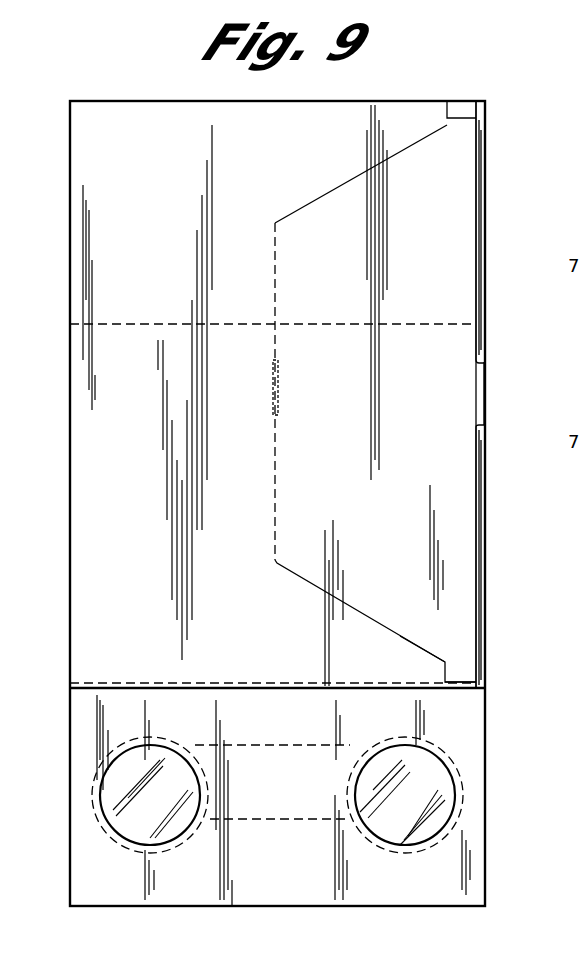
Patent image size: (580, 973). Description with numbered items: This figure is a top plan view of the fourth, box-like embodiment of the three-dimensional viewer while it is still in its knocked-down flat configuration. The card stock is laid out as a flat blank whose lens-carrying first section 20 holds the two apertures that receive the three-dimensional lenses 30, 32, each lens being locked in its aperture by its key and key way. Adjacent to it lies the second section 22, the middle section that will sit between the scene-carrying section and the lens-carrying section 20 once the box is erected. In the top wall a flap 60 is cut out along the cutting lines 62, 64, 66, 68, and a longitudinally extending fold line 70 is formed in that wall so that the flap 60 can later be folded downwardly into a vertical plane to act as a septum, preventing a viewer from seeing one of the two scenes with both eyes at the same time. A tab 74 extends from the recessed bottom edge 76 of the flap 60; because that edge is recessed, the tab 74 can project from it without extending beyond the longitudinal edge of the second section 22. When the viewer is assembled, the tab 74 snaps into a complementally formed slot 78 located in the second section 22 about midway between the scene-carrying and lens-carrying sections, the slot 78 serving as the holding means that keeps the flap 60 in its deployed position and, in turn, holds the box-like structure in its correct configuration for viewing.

The first section 20 is at (262, 890).
The second section 22 is at (480, 162).
The 3-D lens 30 is at (122, 818).
The 3-D lens 32 is at (440, 786).
The flap 60 is at (312, 540).
The cutting line 62 is at (447, 677).
The cutting line 64 is at (418, 645).
The cutting line 66 is at (398, 158).
The cutting line 68 is at (450, 118).
The fold line 70 is at (272, 250).
The tab 74 is at (478, 395).
The recessed bottom edge 76 is at (478, 250).
The slot 78 is at (278, 386).